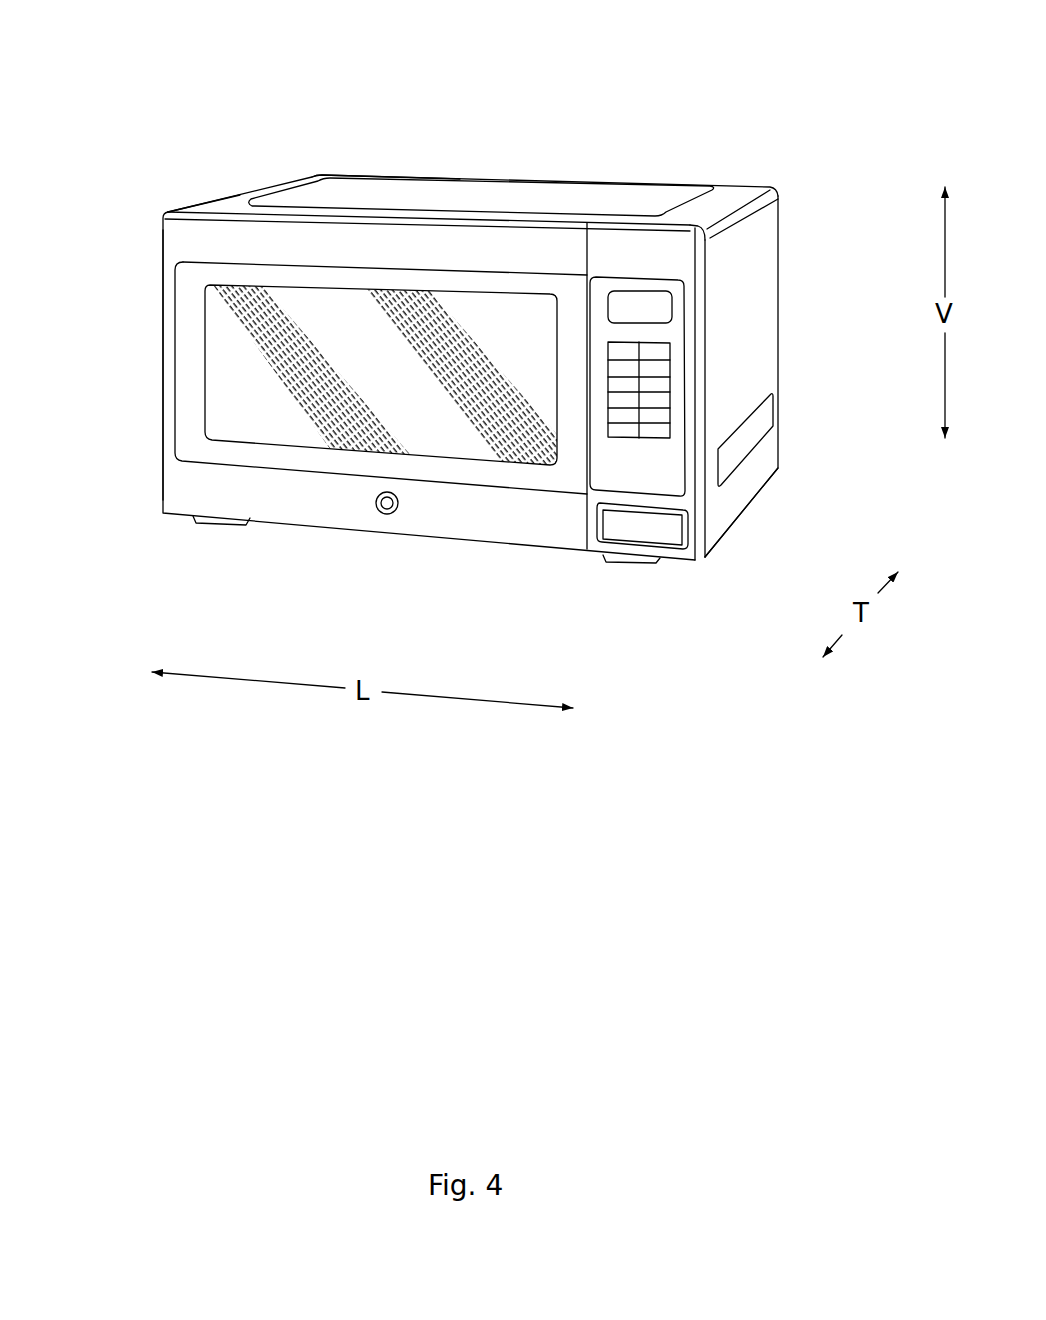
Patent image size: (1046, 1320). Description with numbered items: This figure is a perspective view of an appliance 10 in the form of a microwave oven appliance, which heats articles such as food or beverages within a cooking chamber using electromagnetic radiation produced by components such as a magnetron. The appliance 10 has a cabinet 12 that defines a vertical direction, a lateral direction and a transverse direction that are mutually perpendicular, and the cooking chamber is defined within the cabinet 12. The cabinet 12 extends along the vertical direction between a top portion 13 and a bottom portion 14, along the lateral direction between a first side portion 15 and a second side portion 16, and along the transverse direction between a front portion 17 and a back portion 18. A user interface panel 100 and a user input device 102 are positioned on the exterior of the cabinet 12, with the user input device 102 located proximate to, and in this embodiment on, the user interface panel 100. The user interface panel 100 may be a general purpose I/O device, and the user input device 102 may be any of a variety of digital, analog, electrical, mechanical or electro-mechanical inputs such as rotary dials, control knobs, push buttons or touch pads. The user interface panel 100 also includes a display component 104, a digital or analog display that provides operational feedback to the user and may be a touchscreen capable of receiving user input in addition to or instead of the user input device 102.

The appliance 10 is at (185, 113).
The cabinet 12 is at (405, 193).
The top portion 13 is at (750, 198).
The bottom portion 14 is at (747, 519).
The first side portion 15 is at (158, 375).
The second side portion 16 is at (749, 317).
The front portion 17 is at (153, 215).
The back portion 18 is at (310, 173).
The user interface panel 100 is at (652, 476).
The user input device 102 is at (655, 385).
The display component 104 is at (650, 305).